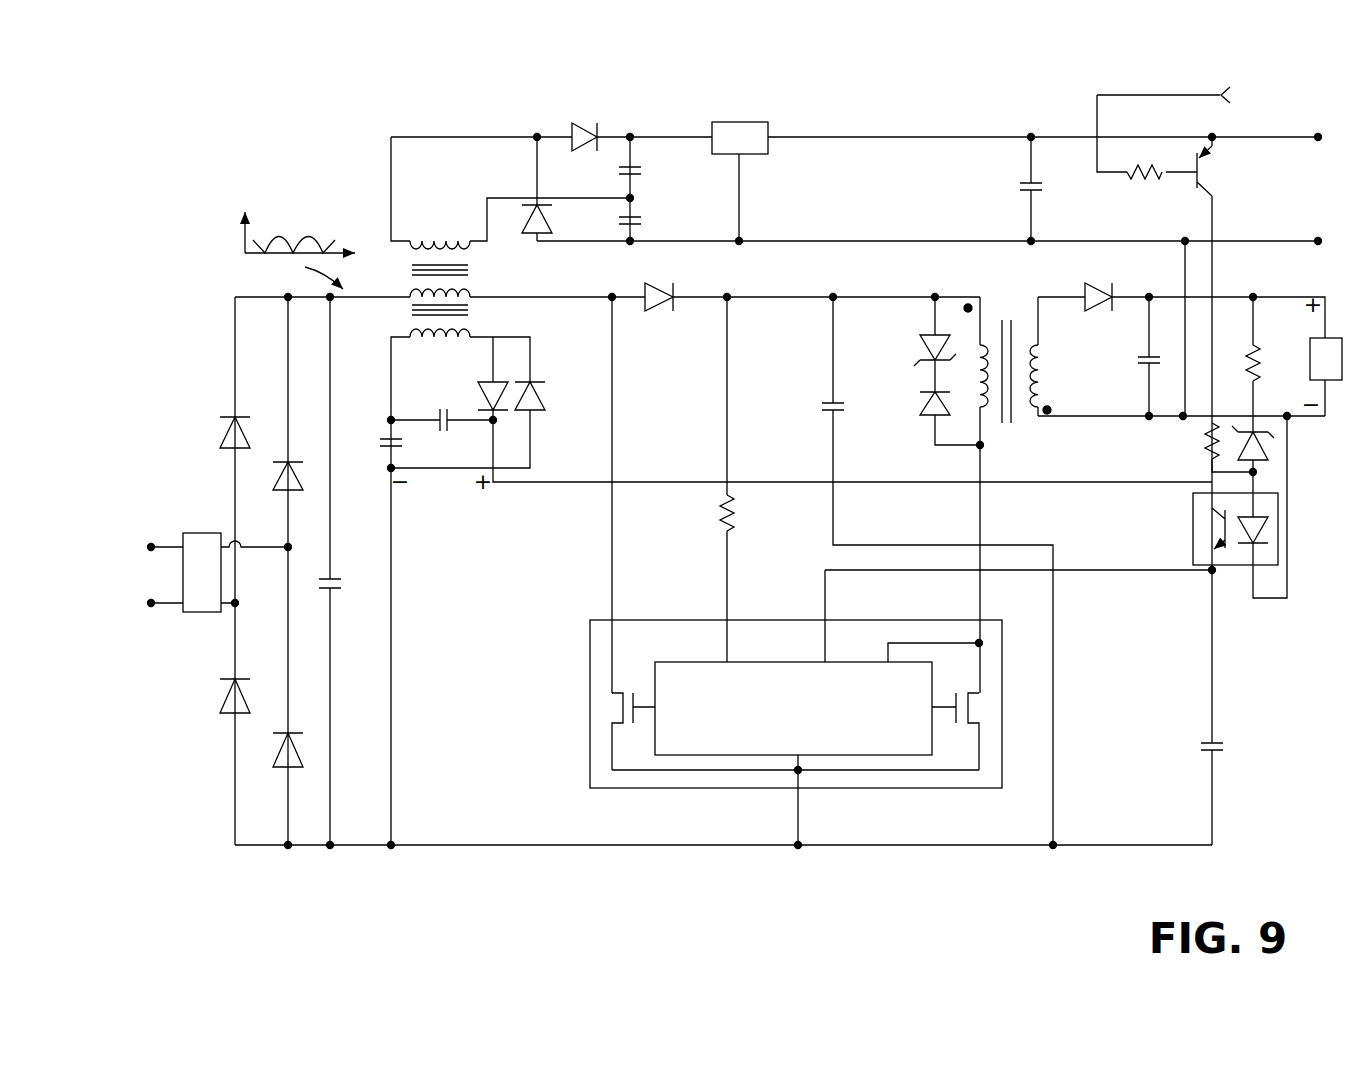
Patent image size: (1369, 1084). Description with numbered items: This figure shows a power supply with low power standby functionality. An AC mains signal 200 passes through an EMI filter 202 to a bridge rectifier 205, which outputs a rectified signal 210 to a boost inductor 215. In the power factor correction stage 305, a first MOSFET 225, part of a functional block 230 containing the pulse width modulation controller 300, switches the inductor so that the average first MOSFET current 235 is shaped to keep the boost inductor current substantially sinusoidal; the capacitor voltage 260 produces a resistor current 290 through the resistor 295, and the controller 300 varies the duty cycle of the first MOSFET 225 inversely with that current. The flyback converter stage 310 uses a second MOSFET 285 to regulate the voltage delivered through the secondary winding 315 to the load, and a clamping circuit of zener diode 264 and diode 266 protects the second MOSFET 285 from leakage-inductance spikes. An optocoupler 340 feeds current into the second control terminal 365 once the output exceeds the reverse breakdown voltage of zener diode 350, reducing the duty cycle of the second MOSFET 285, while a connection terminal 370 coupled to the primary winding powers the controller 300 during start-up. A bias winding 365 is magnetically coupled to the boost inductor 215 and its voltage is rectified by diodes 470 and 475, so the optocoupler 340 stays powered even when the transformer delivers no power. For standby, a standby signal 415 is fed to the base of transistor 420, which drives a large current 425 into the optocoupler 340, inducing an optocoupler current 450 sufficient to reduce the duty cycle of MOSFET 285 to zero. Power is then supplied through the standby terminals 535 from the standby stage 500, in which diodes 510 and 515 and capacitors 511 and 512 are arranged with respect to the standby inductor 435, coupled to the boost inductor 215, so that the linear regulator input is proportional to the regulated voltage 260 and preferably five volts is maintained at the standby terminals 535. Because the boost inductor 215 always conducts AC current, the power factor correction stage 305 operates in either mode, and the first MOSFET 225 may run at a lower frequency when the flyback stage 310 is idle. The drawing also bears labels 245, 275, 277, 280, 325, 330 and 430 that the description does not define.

The AC Mains signal 200 is at (154, 590).
The EMI filter 202 is at (190, 497).
The bridge rectifier 205 is at (222, 873).
The rectified signal 210 is at (592, 292).
The boost inductor 215 is at (461, 290).
The first MOSFET 225 is at (621, 731).
The functional block 230 is at (765, 620).
The average first MOSFET current 235 is at (599, 465).
The auxiliary winding 245 is at (525, 313).
The capacitor voltage 260 is at (794, 422).
The zener diode 264 is at (921, 344).
The diode 266 is at (933, 418).
The capacitor current 275 is at (846, 318).
The input capacitor 277 is at (343, 571).
The bulk capacitor 280 is at (853, 408).
The second MOSFET 285 is at (967, 731).
The resistor current 290 is at (713, 452).
The resistor 295 is at (706, 513).
The pulse width modulation controller 300 is at (793, 708).
The power factor correction stage 305 is at (851, 893).
The flyback converter stage 310 is at (1294, 893).
The secondary winding 315 is at (1020, 495).
The output diode 325 is at (1100, 284).
The output capacitor 330 is at (1132, 356).
The optocoupler 340 is at (1235, 541).
The zener diode 350 is at (1261, 448).
The second control terminal 365 is at (860, 608).
The connection terminal 370 is at (890, 661).
The standby signal 415 is at (1242, 100).
The transistor 420 is at (1186, 166).
The large current 425 is at (1224, 190).
The feedback current 430 is at (1168, 557).
The standby inductor 435 is at (440, 229).
The optocoupler current 450 is at (740, 138).
The diode 470 is at (480, 384).
The diode 475 is at (520, 384).
The standby stage 500 is at (691, 189).
The diode 510 is at (580, 123).
The capacitor 511 is at (648, 174).
The capacitor 512 is at (648, 224).
The diode 515 is at (555, 219).
The standby terminals 535 is at (1309, 188).